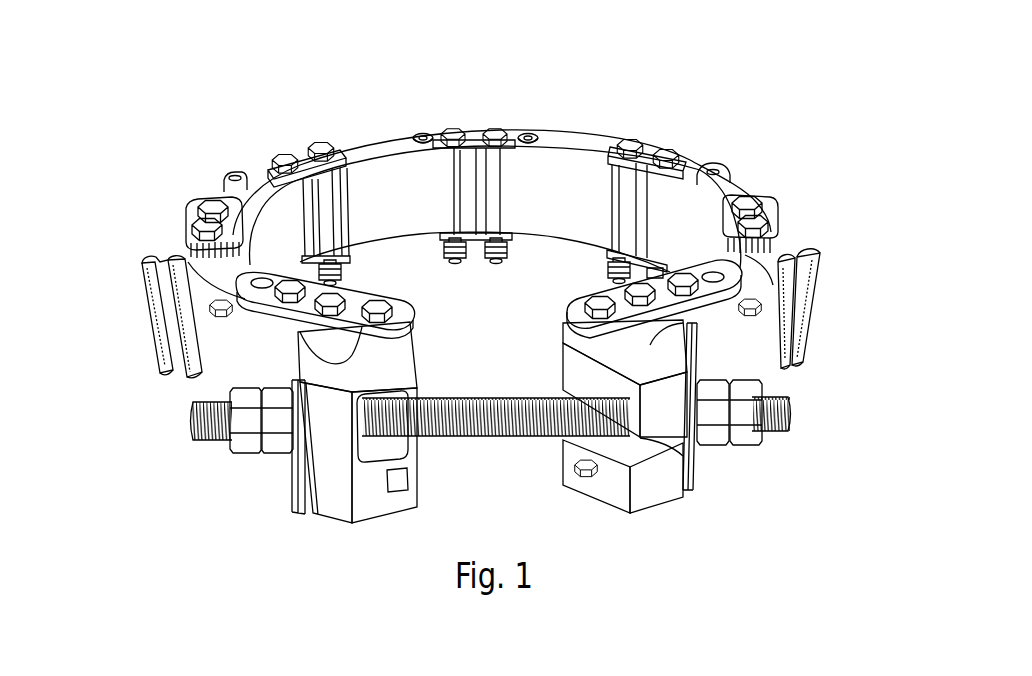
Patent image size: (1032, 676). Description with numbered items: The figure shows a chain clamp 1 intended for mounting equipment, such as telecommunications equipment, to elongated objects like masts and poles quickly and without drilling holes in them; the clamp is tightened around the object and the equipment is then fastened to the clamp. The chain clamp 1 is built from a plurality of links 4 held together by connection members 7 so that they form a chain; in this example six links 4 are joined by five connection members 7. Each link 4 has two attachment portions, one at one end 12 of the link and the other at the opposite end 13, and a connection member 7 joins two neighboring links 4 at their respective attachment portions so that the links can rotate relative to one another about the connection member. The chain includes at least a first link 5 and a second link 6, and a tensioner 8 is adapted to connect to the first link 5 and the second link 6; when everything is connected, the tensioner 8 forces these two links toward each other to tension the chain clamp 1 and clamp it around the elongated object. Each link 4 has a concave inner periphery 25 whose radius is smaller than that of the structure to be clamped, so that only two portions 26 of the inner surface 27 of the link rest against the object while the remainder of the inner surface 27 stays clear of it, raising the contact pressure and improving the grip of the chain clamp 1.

The chain clamp 1 is at (213, 107).
The link 4 is at (685, 143).
The first link 5 is at (203, 298).
The second link 6 is at (767, 285).
The connection member 7 is at (763, 212).
The tensioner 8 is at (275, 518).
The end of the link 12 is at (315, 133).
The opposite end of the link 13 is at (432, 128).
The concave inner periphery 25 is at (375, 202).
The portions of the inner surface 26 is at (612, 185).
The inner surface of the link 27 is at (412, 197).